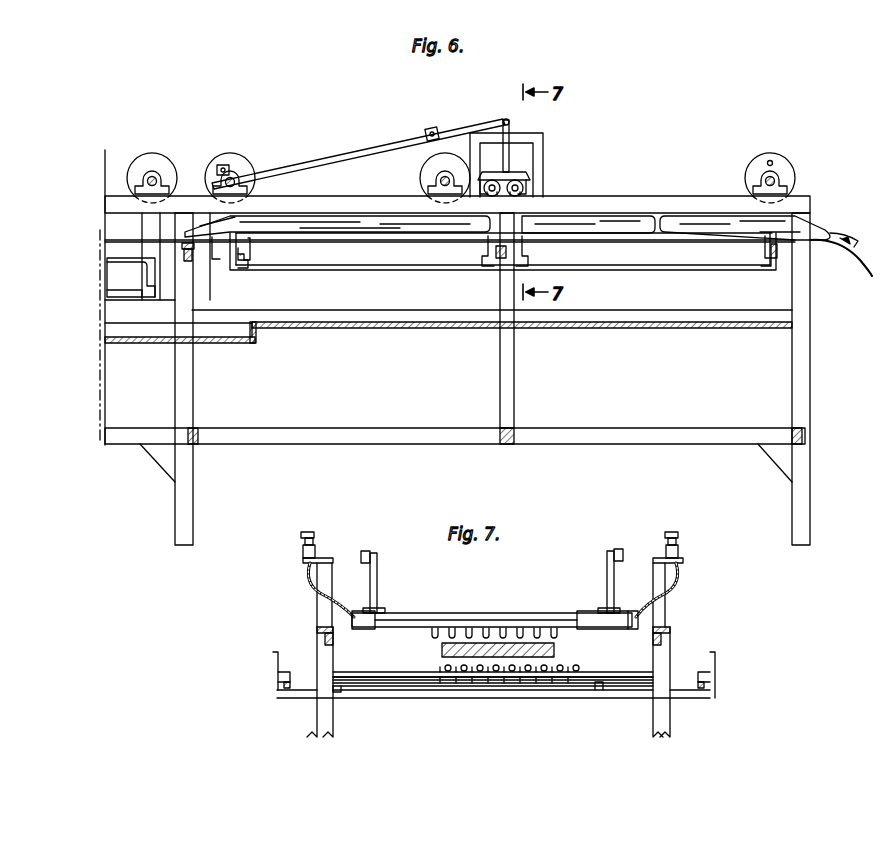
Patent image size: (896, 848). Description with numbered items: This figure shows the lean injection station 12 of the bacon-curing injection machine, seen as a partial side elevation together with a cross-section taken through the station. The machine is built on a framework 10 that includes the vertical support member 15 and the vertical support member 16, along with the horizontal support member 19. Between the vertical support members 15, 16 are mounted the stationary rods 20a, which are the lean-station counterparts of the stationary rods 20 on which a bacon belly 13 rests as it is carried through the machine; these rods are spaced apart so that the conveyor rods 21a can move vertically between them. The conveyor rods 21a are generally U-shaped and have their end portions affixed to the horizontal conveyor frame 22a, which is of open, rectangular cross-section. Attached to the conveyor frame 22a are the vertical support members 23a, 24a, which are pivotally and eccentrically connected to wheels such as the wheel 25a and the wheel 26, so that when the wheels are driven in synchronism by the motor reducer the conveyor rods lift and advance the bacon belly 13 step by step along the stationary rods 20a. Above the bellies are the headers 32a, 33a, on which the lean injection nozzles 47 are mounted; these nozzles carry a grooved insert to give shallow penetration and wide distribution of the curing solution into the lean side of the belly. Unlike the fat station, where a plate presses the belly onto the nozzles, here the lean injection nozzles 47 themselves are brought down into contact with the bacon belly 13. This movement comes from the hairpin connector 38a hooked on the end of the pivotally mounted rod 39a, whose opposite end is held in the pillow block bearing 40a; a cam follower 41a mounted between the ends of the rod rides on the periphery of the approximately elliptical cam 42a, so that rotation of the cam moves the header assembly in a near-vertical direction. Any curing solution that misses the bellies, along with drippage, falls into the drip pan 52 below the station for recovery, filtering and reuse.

In FIG. 6, the framework 10 is at (800, 384).
In FIG. 6, the lean injection station 12 is at (362, 412).
In FIG. 6, the bacon belly 13 is at (322, 220).
In FIG. 7, the bacon belly 13 is at (600, 660).
In FIG. 6, the vertical support member 15 is at (195, 510).
In FIG. 6, the vertical support member 16 is at (812, 512).
In FIG. 6, the horizontal support member 19 is at (383, 314).
In FIG. 7, the stationary rods 20 is at (426, 636).
In FIG. 6, the stationary rods 20a is at (113, 239).
In FIG. 7, the stationary rods 20a is at (412, 672).
In FIG. 6, the conveyor rods 21a is at (270, 262).
In FIG. 7, the conveyor rods 21a is at (588, 682).
In FIG. 6, the conveyor frame 22a is at (655, 265).
In FIG. 7, the conveyor frame 22a is at (462, 692).
In FIG. 6, the vertical support member 23a is at (812, 218).
In FIG. 6, the vertical support member 24a is at (224, 260).
In FIG. 6, the wheel 25a is at (790, 170).
In FIG. 6, the wheel 26 is at (152, 160).
In FIG. 6, the header 32a is at (472, 167).
In FIG. 6, the header 33a is at (520, 180).
In FIG. 7, the header 33a is at (404, 613).
In FIG. 6, the hairpin connector 38a is at (511, 151).
In FIG. 7, the hairpin connector 38a is at (380, 578).
In FIG. 6, the pivotally mounted rod 39a is at (318, 152).
In FIG. 6, the pillow block bearing 40a is at (222, 162).
In FIG. 6, the cam follower 41a is at (428, 130).
In FIG. 7, the cam follower 41a is at (368, 551).
In FIG. 6, the cam 42a is at (422, 176).
In FIG. 6, the lean injection nozzles 47 is at (520, 200).
In FIG. 7, the lean injection nozzles 47 is at (578, 612).
In FIG. 6, the drip pan 52 is at (606, 328).